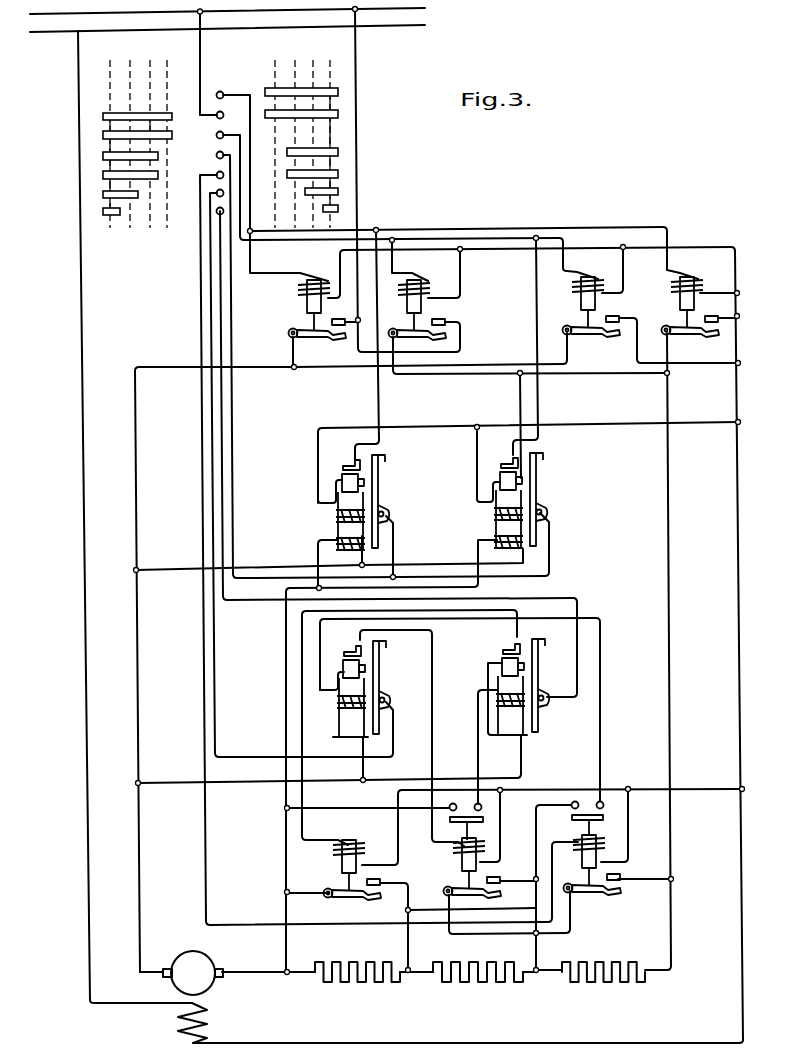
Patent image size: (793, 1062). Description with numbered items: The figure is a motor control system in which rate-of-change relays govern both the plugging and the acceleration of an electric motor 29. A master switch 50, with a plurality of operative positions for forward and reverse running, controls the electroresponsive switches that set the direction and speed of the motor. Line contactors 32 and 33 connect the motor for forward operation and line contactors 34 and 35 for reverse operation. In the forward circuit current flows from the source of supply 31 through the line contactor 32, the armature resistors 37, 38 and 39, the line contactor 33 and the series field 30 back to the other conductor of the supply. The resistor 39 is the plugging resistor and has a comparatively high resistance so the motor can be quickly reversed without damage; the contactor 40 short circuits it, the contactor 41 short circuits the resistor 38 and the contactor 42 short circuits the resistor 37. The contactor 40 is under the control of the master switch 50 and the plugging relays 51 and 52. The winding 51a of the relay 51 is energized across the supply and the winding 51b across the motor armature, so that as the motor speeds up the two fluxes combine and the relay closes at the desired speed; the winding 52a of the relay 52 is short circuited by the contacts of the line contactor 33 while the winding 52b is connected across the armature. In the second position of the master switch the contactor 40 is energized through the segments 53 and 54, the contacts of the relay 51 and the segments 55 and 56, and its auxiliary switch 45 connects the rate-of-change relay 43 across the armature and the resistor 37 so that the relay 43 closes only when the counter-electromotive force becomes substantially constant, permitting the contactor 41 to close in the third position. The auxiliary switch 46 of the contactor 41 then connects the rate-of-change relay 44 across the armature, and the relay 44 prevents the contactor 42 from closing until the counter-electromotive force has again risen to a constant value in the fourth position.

The electric motor 29 is at (193, 955).
The series field 30 is at (180, 1025).
The source of supply 31 is at (388, 9).
The line contactor 32 is at (314, 310).
The line contactor 33 is at (688, 307).
The line contactor 34 is at (416, 310).
The line contactor 35 is at (588, 307).
The resistor 37 is at (357, 983).
The resistor 38 is at (478, 982).
The plugging resistor 39 is at (603, 980).
The contactor 40 is at (590, 865).
The contactor 41 is at (469, 868).
The contactor 42 is at (350, 870).
The rate-of-change relay 43 is at (351, 688).
The rate-of-change relay 44 is at (507, 686).
The auxiliary switch 45 is at (598, 818).
The auxiliary switch 46 is at (458, 803).
The master switch 50 is at (234, 138).
The plugging relay 51 is at (361, 508).
The winding 51a is at (338, 521).
The winding 51b is at (347, 549).
The plugging relay 52 is at (518, 498).
The winding 52a is at (498, 506).
The winding 52b is at (498, 546).
The segment 53 is at (338, 92).
The segment 54 is at (338, 114).
The segment 55 is at (338, 152).
The segment 56 is at (338, 174).